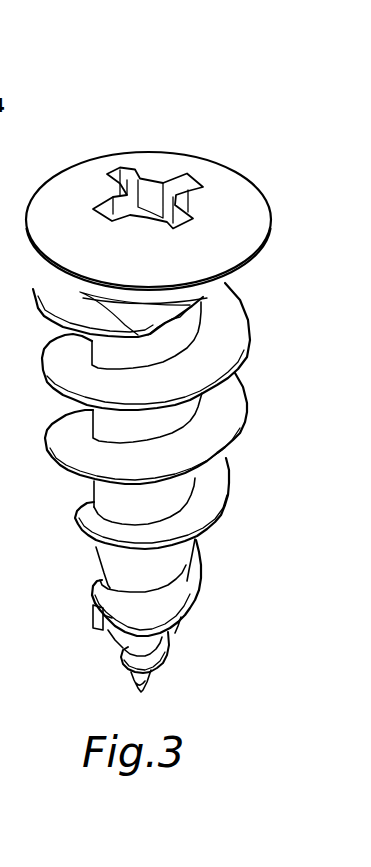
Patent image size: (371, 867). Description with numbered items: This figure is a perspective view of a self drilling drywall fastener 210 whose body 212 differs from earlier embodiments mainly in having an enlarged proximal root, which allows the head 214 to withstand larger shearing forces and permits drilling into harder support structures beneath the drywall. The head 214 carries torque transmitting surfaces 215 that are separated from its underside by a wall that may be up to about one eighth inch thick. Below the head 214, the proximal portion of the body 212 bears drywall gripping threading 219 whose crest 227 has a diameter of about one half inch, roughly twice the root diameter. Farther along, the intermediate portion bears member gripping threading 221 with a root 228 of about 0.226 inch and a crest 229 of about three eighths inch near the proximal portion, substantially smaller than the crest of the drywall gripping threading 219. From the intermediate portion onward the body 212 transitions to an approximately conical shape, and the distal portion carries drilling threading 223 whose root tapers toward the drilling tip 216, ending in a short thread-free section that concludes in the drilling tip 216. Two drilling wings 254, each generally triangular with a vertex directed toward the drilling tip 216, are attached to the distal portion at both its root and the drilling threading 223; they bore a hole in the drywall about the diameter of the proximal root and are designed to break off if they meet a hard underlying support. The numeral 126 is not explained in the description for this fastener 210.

The drywall fastener 210 is at (287, 492).
The body 212 is at (190, 407).
The head 214 is at (242, 189).
The torque transmitting surfaces 215 is at (135, 188).
The drilling tip 216 is at (143, 694).
The drywall gripping threading 219 is at (236, 350).
The member gripping threading 221 is at (212, 520).
The drilling threading 223 is at (193, 605).
The crest 227 is at (248, 360).
The root 228 is at (96, 489).
The crest 229 is at (231, 483).
The drilling wings 254 is at (97, 623).
The upper thread 126 is at (192, 330).